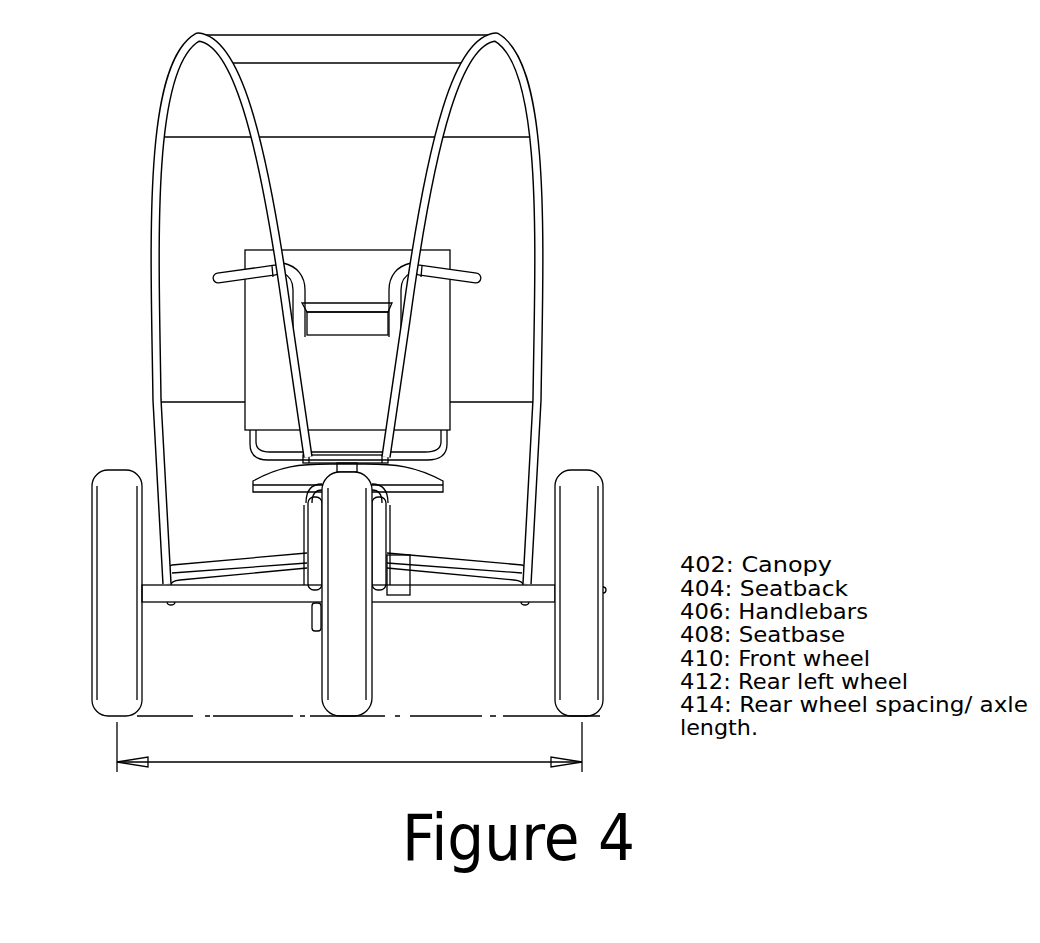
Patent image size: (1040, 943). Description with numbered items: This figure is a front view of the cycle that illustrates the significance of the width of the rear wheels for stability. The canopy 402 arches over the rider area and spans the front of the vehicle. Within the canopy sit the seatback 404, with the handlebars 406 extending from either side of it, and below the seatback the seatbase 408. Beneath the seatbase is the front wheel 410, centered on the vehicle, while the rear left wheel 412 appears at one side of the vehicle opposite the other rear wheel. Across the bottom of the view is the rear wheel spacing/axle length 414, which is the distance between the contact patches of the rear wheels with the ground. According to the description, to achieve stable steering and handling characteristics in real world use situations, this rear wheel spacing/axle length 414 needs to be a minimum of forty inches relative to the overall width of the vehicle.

The canopy 402 is at (482, 93).
The seatback 404 is at (422, 380).
The handlebars 406 is at (463, 273).
The seatbase 408 is at (405, 475).
The front wheel 410 is at (347, 570).
The rear left wheel 412 is at (578, 572).
The rear wheel spacing/axle length 414 is at (349, 747).